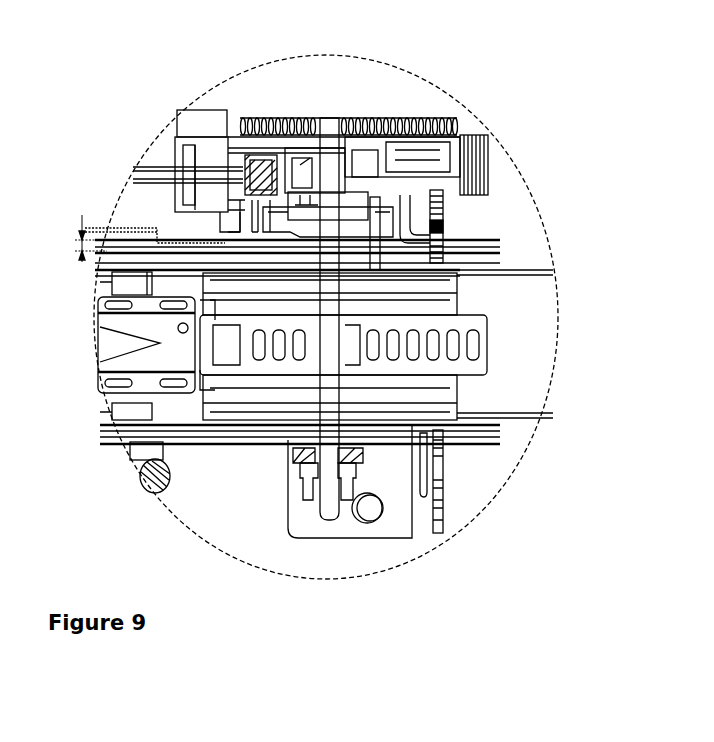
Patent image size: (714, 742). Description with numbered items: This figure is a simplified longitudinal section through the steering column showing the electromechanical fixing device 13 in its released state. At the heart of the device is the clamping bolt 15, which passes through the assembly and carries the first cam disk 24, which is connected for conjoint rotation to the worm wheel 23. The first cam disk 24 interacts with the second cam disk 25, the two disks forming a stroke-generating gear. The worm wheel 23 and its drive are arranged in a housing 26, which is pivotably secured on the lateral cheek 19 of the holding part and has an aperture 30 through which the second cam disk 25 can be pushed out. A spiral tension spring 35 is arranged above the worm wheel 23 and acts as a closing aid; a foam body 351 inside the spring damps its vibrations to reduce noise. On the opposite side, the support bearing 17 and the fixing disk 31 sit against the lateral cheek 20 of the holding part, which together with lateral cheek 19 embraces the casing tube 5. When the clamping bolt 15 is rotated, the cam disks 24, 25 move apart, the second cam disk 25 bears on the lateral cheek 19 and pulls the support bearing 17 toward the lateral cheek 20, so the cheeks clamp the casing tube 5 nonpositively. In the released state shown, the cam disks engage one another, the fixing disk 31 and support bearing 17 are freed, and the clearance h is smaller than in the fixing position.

The casing tube 5 is at (503, 298).
The electromechanical fixing device 13 is at (305, 102).
The clamping bolt 15 is at (330, 505).
The support bearing 17 is at (305, 515).
The lateral cheek 19 is at (223, 217).
The lateral cheek 20 is at (273, 448).
The worm wheel 23 is at (477, 130).
The first cam disk 24 is at (329, 530).
The second cam disk 25 is at (442, 222).
The housing 26 is at (255, 177).
The aperture 30 is at (462, 178).
The fixing disk 31 is at (360, 245).
The spiral tension spring 35 is at (349, 81).
The foam body 351 is at (362, 117).
The clearance h is at (82, 216).